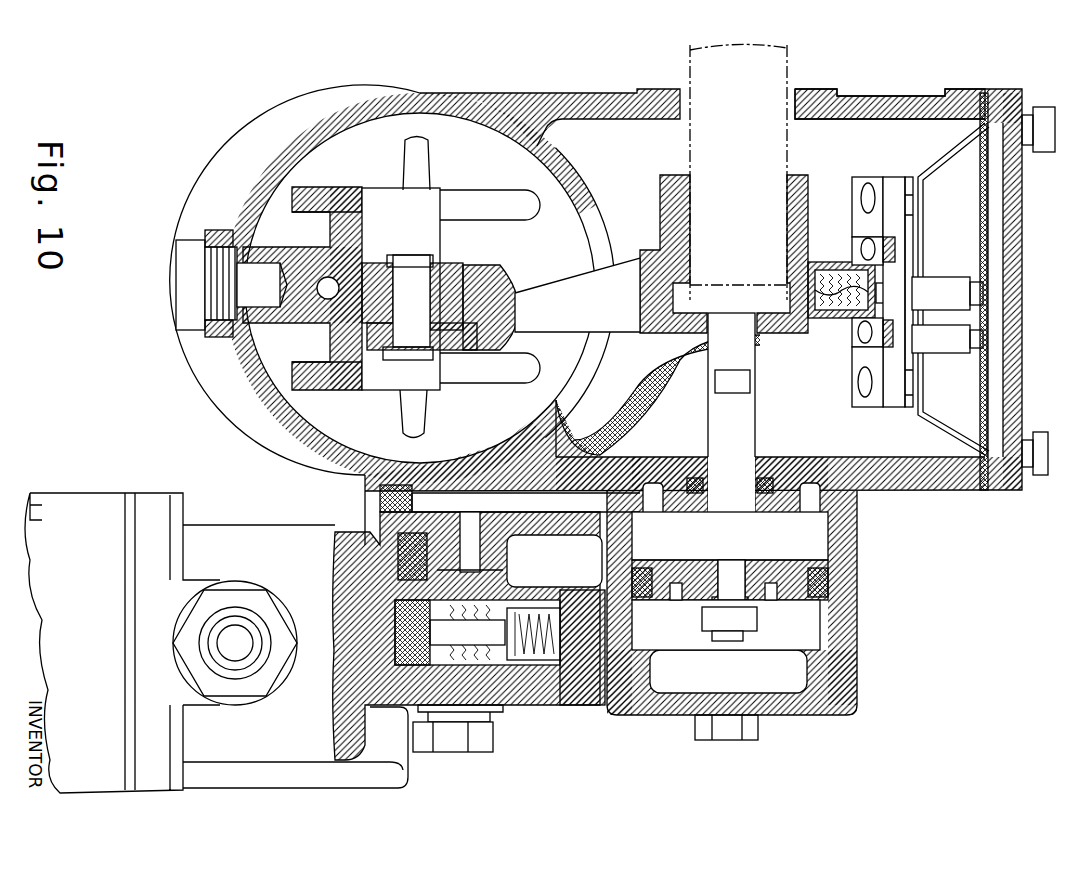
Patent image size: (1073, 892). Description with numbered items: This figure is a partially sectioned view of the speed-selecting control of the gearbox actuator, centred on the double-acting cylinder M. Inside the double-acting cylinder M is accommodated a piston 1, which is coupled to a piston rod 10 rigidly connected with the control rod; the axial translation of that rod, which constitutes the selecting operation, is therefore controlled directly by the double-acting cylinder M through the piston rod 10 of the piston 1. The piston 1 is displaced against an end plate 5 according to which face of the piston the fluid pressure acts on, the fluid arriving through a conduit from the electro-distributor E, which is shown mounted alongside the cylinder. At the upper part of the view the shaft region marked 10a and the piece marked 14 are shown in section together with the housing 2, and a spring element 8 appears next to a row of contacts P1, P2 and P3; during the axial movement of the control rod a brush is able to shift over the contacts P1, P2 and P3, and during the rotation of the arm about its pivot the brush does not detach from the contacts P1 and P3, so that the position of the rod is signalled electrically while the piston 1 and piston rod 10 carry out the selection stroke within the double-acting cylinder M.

The piston 1 is at (783, 597).
The housing 2 is at (283, 428).
The end plate 5 is at (818, 704).
The spring assembly 8 is at (880, 306).
The piston rod 10 is at (722, 448).
The shaft hub 10a is at (661, 188).
The gasket plate 14 is at (510, 498).
The electro-distributor E is at (540, 700).
The double-acting cylinder M is at (857, 533).
The contact P1 is at (908, 242).
The contact P2 is at (908, 278).
The contact P3 is at (908, 338).